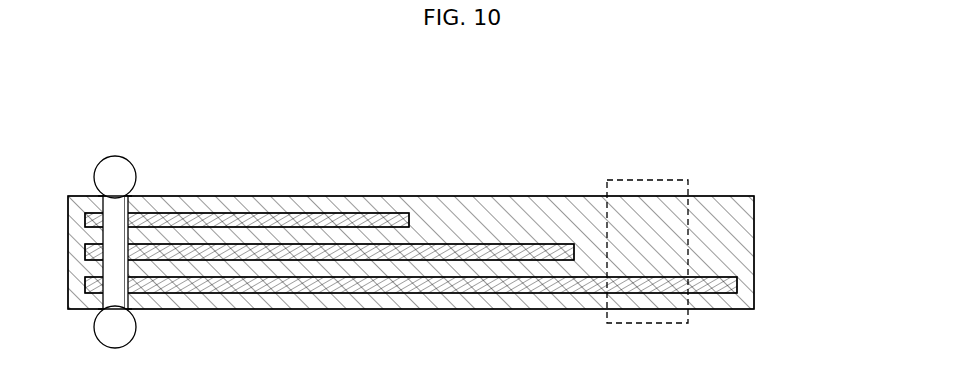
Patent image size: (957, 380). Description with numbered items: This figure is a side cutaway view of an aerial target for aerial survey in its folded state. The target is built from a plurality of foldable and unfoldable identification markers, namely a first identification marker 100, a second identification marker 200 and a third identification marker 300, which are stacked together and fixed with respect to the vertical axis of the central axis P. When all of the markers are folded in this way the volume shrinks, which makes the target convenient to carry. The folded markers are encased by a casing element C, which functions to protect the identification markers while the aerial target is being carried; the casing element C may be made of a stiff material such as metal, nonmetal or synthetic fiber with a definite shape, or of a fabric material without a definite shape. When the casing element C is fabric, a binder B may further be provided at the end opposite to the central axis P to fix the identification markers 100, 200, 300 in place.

The first identification marker 100 is at (723, 283).
The second identification marker 200 is at (500, 250).
The third identification marker 300 is at (270, 213).
The central axis P is at (125, 172).
The casing element C is at (395, 196).
The binder B is at (670, 180).